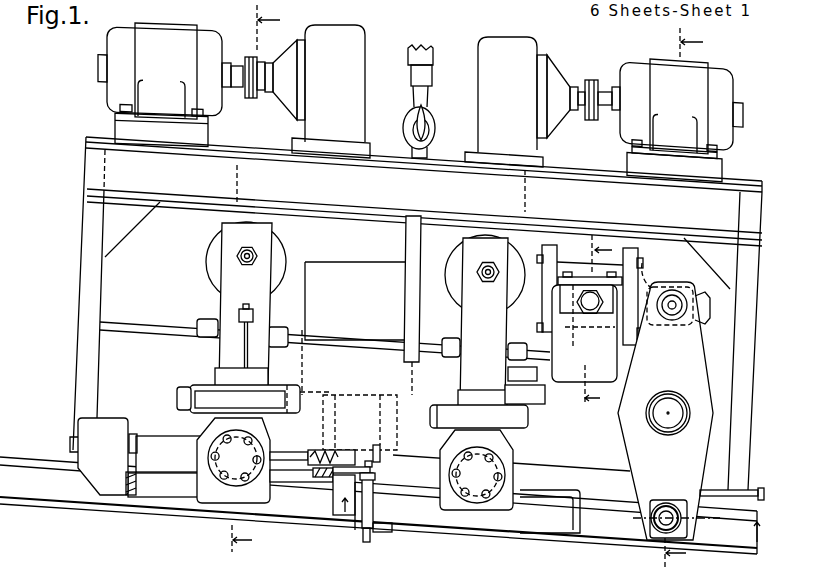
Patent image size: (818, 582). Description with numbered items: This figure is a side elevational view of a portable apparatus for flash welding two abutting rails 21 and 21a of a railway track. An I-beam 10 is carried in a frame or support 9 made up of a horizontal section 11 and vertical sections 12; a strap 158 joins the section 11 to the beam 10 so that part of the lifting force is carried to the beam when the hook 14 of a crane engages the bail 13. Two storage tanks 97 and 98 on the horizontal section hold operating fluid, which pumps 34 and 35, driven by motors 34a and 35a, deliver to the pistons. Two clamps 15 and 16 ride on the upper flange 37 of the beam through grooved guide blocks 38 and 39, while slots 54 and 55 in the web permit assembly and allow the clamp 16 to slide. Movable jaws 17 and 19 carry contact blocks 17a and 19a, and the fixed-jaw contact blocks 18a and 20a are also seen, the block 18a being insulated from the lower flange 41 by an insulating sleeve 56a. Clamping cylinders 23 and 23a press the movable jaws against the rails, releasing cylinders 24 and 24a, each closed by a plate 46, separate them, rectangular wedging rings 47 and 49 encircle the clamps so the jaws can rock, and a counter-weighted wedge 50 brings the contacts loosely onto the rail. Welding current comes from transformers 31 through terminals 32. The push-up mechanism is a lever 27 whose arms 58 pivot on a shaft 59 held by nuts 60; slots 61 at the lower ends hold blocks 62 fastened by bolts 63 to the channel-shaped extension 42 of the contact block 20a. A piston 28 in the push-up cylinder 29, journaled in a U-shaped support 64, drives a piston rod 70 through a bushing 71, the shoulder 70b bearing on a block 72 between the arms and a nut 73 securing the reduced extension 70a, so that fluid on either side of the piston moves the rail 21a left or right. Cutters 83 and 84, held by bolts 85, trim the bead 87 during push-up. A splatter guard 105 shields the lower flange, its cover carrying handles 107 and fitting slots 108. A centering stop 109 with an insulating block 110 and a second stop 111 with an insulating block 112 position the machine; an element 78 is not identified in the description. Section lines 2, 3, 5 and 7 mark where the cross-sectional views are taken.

The frame or support 9 is at (74, 212).
The I-beam 10 is at (151, 367).
The horizontal section 11 is at (381, 188).
The vertical sections 12 is at (86, 271).
The bail 13 is at (435, 130).
The hook 14 is at (428, 99).
The clamp 15 is at (218, 306).
The clamp 16 is at (459, 321).
The clamping jaw 17 is at (268, 300).
The contact block 17a is at (178, 496).
The contact block 18a is at (175, 446).
The clamping jaw 19 is at (505, 312).
The contact block 19a is at (540, 530).
The contact block 20a is at (572, 470).
The rail 21 is at (62, 498).
The rail 21a is at (718, 534).
The clamping cylinder 23 is at (274, 250).
The clamping cylinder 23a is at (460, 258).
The releasing cylinder 24 is at (268, 445).
The releasing cylinder 24a is at (503, 453).
The lever 27 is at (676, 462).
The piston 28 is at (584, 333).
The push-up cylinder 29 is at (558, 280).
The transformers 31 is at (345, 275).
The terminals 32 is at (375, 405).
The pump 34 is at (362, 57).
The motor 34a is at (205, 34).
The pump 35 is at (478, 58).
The motor 35a is at (728, 77).
The upper flange 37 is at (345, 344).
The guide block 38 is at (283, 340).
The guide block 39 is at (445, 346).
The lower flange 41 is at (133, 434).
The channel shaped extension 42 is at (629, 535).
The plate 46 is at (252, 479).
The wedging ring 47 is at (276, 392).
The wedging ring 49 is at (512, 410).
The counter-weighted wedge 50 is at (249, 348).
The slot 54 is at (422, 405).
The slot 55 is at (185, 386).
The insulating sleeve 56a is at (313, 470).
The arm 58 is at (619, 428).
The shaft 59 is at (675, 420).
The nuts 60 is at (688, 410).
The slot 61 is at (660, 504).
The block 62 is at (677, 505).
The bolts 63 is at (652, 507).
The U-shaped support 64 is at (552, 377).
The piston rod 70 is at (652, 287).
The reduced extension 70a is at (710, 302).
The shoulder 70b is at (658, 326).
The bushing 71 is at (652, 290).
The block 72 is at (685, 288).
The nut 73 is at (707, 322).
The stop bracket 78 is at (756, 490).
The cutter 83 is at (374, 480).
The cutter 84 is at (386, 533).
The bolts 85 is at (369, 542).
The bead 87 is at (354, 530).
The storage tank 97 is at (237, 170).
The storage tank 98 is at (525, 188).
The splatter guard 105 is at (370, 471).
The handles 107 is at (380, 447).
The slots 108 is at (372, 462).
The stop 109 is at (352, 451).
The block of insulating material 110 is at (338, 450).
The second stop 111 is at (103, 496).
The block of insulating material 112 is at (131, 496).
The strap 158 is at (408, 244).
The section line 2 is at (250, 278).
The section line 3 is at (678, 298).
The section line 5 is at (555, 525).
The section line 7 is at (600, 320).